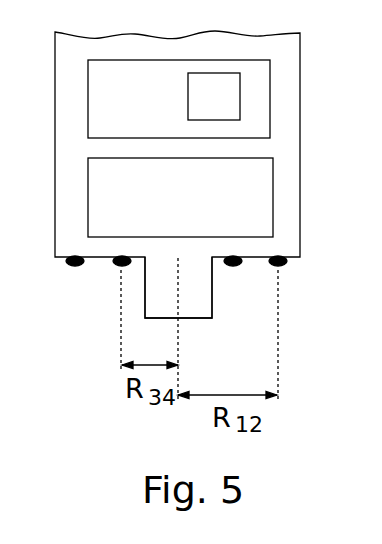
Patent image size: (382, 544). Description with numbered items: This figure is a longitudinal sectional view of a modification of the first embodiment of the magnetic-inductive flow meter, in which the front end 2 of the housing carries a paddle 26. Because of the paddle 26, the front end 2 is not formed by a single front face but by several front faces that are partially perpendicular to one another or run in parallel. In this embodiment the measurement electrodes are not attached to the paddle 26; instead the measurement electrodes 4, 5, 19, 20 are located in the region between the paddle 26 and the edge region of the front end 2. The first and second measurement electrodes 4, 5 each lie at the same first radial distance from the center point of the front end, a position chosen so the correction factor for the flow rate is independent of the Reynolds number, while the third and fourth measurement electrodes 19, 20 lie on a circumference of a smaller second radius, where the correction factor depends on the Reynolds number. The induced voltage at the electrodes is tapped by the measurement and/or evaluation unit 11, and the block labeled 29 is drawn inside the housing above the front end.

The front end 2 is at (57, 258).
The first measurement electrode 4 is at (72, 266).
The second measurement electrode 5 is at (283, 264).
The measurement and/or evaluation unit 11 is at (214, 96).
The third measurement electrode 19 is at (118, 264).
The fourth measurement electrode 20 is at (233, 266).
The paddle 26 is at (145, 311).
The electronic component 29 is at (180, 197).